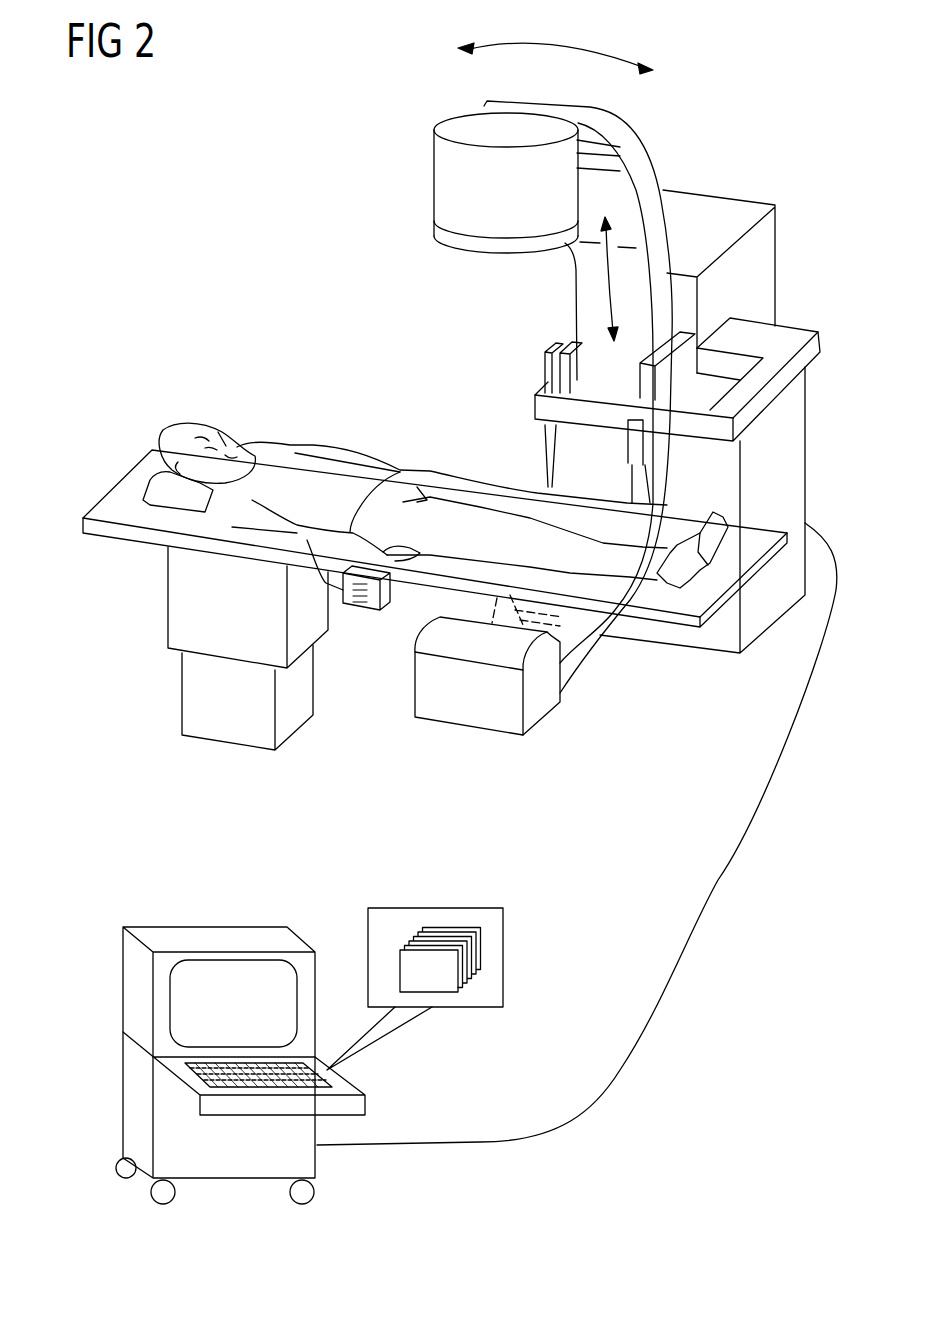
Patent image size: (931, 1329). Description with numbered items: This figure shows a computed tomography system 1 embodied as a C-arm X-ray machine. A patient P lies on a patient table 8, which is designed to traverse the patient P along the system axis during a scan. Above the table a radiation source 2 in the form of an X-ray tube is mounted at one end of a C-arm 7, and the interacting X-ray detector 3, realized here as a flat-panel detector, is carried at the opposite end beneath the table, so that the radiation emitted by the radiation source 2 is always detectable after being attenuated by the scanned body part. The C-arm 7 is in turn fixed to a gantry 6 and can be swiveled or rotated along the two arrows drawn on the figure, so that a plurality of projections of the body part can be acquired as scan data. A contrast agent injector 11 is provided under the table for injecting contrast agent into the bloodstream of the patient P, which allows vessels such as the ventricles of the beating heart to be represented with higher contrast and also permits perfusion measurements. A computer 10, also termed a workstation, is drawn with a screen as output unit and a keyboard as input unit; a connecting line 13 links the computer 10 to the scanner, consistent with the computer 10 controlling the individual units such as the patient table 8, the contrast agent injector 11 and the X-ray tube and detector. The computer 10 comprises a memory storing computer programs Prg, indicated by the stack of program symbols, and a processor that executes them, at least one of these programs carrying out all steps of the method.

The computed tomography system 1 is at (162, 368).
The radiation source 2 is at (448, 205).
The X-ray detector 3 is at (538, 695).
The gantry 6 is at (777, 220).
The C-arm 7 is at (648, 168).
The patient table 8 is at (108, 527).
The computer 10 is at (305, 1158).
The contrast agent injector 11 is at (358, 610).
The data line / cable 13 is at (720, 878).
The patient P is at (325, 477).
The computer programs Prg is at (447, 992).